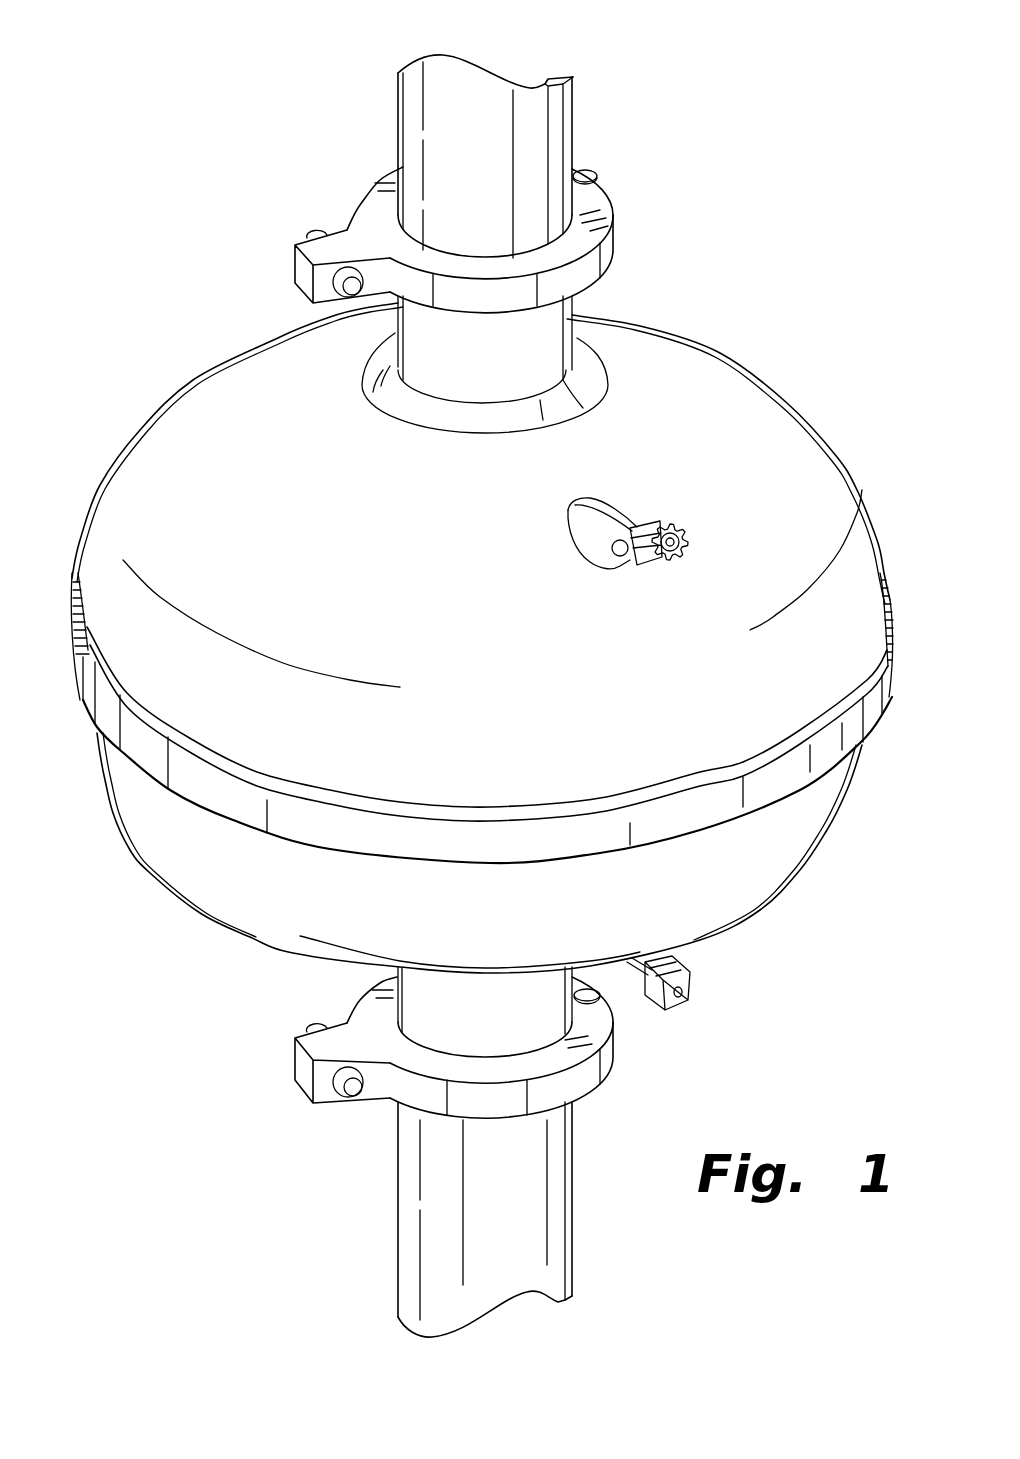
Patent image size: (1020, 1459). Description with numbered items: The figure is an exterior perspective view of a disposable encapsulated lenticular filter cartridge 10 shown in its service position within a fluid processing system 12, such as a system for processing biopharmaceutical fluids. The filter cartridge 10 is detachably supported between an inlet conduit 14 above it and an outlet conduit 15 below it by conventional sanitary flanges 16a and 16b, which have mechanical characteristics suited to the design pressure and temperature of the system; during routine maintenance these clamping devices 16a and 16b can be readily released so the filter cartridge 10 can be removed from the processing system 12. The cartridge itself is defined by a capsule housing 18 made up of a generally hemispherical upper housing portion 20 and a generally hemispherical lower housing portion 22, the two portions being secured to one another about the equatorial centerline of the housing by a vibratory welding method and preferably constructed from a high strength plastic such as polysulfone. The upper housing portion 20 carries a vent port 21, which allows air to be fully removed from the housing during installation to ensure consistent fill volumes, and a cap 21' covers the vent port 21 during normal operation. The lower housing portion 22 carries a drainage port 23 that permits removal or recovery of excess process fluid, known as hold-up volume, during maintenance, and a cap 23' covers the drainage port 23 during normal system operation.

The filter cartridge 10 is at (156, 367).
The fluid processing system 12 is at (300, 155).
The inlet conduit 14 is at (553, 123).
The outlet conduit 15 is at (532, 1199).
The sanitary flange 16a is at (612, 240).
The sanitary flange 16b is at (395, 1085).
The capsule housing 18 is at (187, 780).
The upper housing portion 20 is at (694, 390).
The vent port 21 is at (615, 571).
The cap 21' is at (700, 519).
The lower housing portion 22 is at (217, 870).
The drainage port 23 is at (651, 927).
The cap 23' is at (703, 994).